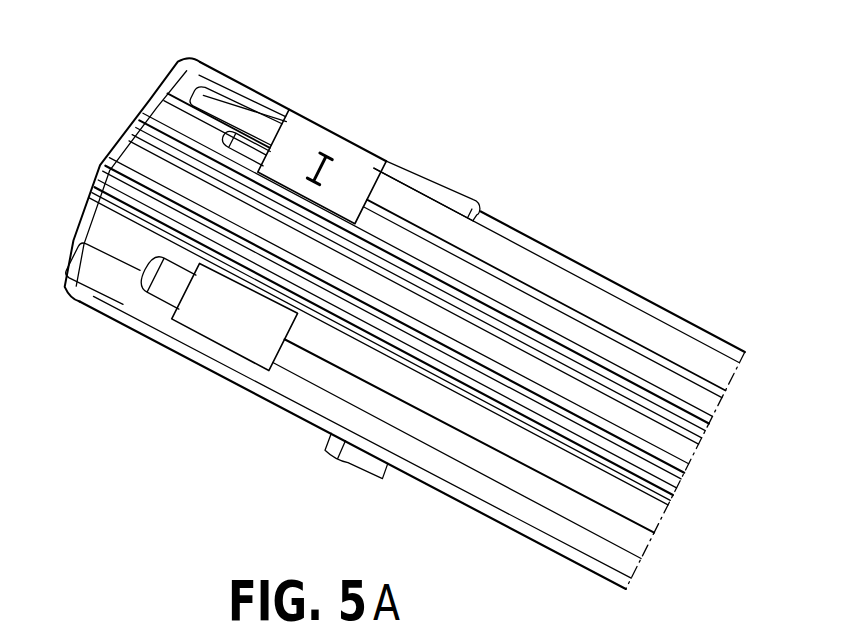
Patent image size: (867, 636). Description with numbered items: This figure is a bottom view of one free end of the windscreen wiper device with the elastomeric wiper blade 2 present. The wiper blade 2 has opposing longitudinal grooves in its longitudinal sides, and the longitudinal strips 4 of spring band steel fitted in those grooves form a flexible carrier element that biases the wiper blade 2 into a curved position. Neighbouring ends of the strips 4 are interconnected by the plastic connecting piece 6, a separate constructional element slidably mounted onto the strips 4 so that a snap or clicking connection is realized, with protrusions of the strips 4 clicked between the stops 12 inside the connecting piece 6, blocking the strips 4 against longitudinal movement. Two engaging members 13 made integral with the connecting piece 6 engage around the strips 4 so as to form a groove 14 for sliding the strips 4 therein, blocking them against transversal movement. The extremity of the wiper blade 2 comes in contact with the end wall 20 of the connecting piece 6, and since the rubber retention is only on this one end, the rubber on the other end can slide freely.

The wiper blade 2 is at (690, 460).
The longitudinal strips 4 is at (215, 112).
The connecting piece 6 is at (307, 114).
The stops 12 is at (238, 148).
The engaging members 13 is at (343, 148).
The groove 14 is at (384, 166).
The end wall 20 is at (105, 150).